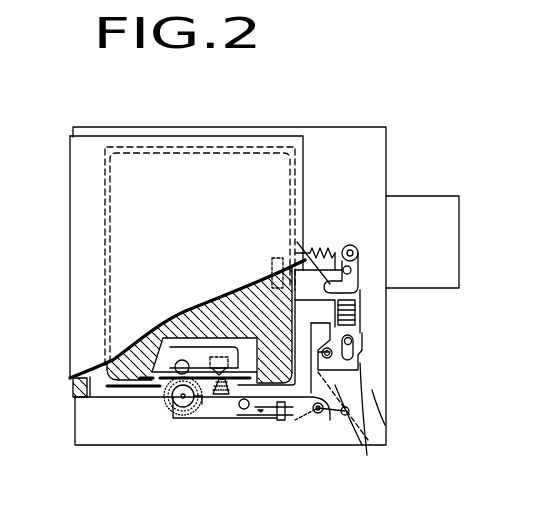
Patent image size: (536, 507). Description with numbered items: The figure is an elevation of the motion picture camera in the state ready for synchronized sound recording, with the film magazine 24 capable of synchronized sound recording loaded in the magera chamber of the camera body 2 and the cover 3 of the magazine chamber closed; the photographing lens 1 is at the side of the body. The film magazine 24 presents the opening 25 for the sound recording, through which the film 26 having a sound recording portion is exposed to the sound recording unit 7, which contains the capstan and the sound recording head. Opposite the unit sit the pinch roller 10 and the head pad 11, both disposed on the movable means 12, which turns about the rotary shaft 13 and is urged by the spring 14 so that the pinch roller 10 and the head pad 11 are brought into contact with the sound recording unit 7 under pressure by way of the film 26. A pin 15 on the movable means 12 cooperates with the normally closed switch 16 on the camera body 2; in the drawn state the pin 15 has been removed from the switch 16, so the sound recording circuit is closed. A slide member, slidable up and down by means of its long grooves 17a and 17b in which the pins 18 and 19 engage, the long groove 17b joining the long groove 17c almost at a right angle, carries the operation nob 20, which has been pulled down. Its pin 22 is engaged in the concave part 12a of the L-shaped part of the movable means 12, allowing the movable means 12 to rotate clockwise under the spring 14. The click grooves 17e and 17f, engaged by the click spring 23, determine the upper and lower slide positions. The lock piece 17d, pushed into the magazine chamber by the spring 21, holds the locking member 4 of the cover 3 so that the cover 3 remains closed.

The photographing lens 1 is at (442, 202).
The camera body 2 is at (322, 132).
The cover for the magazine chamber 3 is at (78, 182).
The locking member 4 is at (272, 265).
The sound recording unit 7 is at (187, 352).
The pinch roller 10 is at (160, 385).
The head pad 11 is at (200, 410).
The movable means 12 is at (215, 396).
The concave part 12a is at (365, 413).
The rotary shaft 13 is at (315, 417).
The spring 14 is at (332, 417).
The pin 15 is at (230, 408).
The switch 16 is at (253, 413).
The long groove 17a is at (355, 360).
The long groove 17b is at (352, 278).
The long groove 17c is at (315, 245).
The lock piece 17d is at (300, 256).
The click groove 17e is at (360, 363).
The click groove 17f is at (358, 337).
The pin 18 is at (353, 349).
The pin 19 is at (357, 252).
The operation nob 20 is at (357, 307).
The spring 21 is at (328, 248).
The pin 22 is at (378, 447).
The click spring 23 is at (372, 395).
The film magazine 24 is at (152, 333).
The opening for the sound recording 25 is at (245, 347).
The film 26 is at (143, 397).